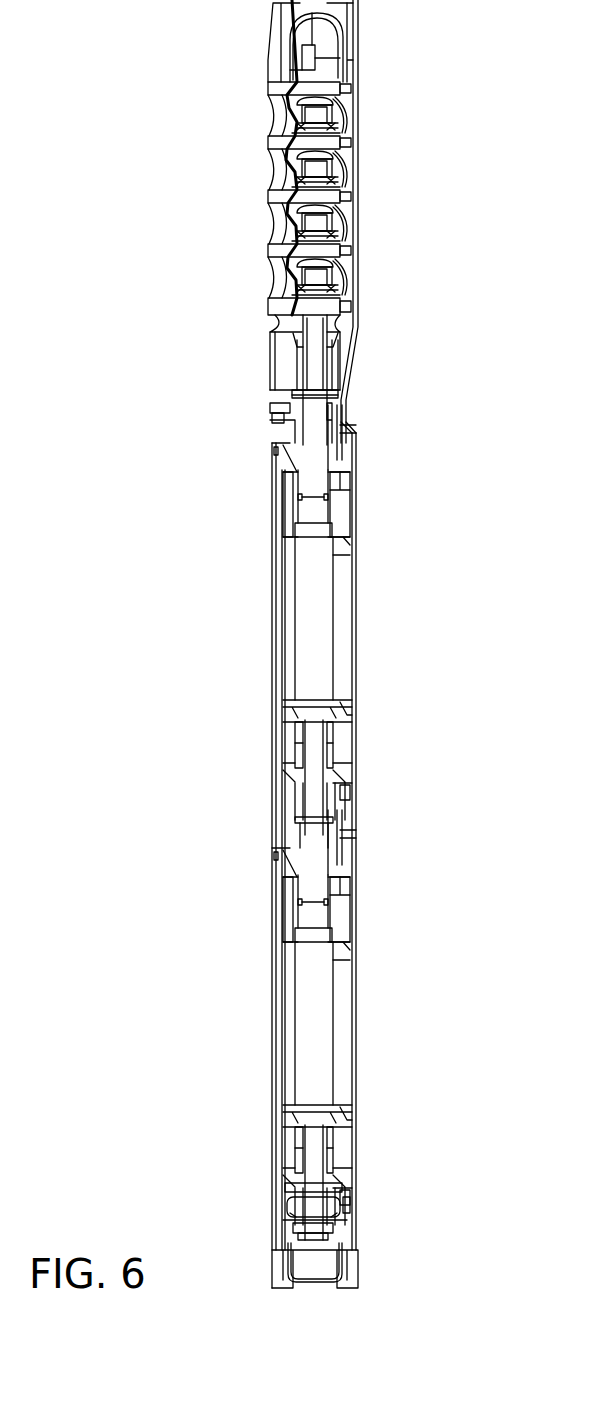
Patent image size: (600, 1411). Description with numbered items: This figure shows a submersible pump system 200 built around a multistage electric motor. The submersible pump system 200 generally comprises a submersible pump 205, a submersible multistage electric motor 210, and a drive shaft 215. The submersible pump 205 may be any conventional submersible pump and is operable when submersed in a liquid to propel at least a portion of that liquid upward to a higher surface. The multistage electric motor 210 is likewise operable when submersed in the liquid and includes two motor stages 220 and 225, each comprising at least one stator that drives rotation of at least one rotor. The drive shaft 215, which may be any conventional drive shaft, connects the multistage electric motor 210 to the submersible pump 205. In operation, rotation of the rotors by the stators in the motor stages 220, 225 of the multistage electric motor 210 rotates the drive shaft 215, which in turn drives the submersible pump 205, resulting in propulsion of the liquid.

The submersible pump system 200 is at (196, 182).
The submersible pump 205 is at (362, 130).
The submersible multistage electric motor 210 is at (362, 631).
The drive shaft 215 is at (313, 403).
The motor stage 220 is at (265, 845).
The motor stage 225 is at (262, 443).